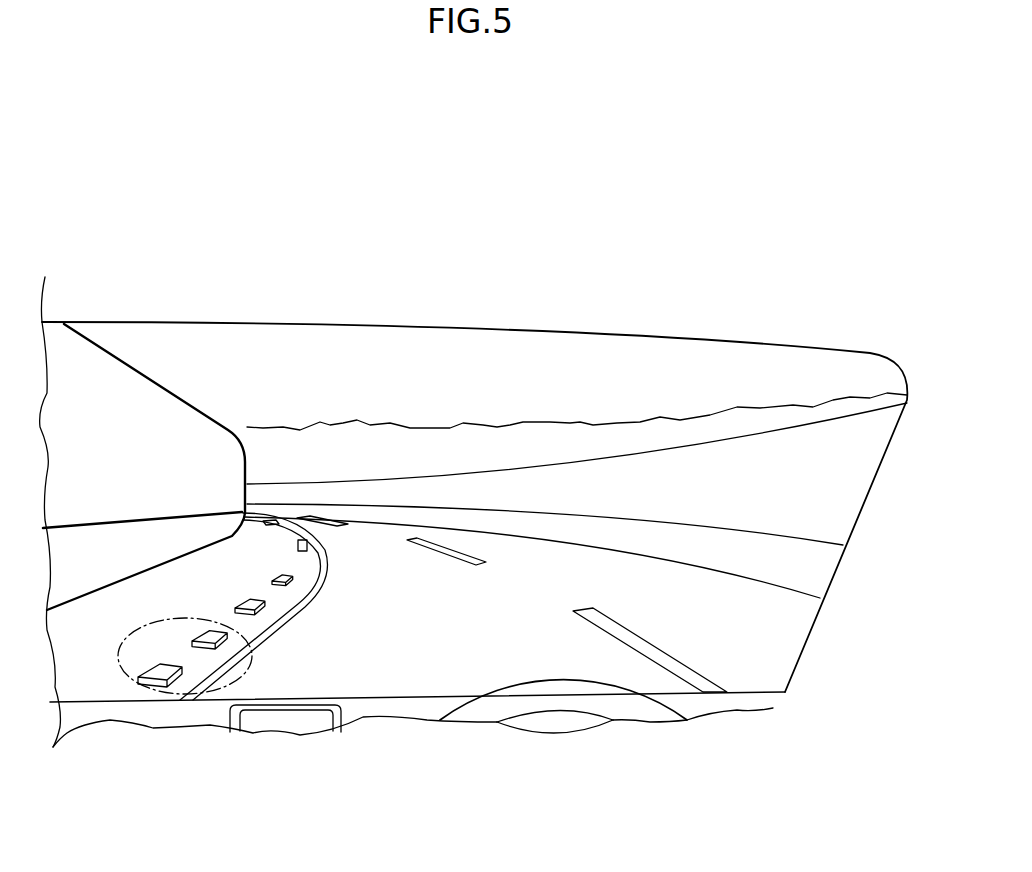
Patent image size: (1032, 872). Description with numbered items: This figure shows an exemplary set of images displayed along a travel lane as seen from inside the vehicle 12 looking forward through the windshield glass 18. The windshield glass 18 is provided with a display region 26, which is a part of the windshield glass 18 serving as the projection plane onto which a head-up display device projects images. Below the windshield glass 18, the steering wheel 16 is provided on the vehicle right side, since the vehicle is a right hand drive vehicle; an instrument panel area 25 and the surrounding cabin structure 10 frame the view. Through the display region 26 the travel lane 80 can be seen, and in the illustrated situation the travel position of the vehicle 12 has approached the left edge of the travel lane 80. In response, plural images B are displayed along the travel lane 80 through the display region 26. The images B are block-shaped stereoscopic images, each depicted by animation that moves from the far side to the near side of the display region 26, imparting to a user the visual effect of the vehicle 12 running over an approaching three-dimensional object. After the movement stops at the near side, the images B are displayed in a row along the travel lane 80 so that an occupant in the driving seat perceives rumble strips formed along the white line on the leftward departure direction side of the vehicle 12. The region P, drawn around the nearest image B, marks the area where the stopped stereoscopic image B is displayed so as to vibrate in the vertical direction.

The vehicle 10 is at (316, 263).
The vehicle 12 is at (352, 213).
The steering wheel 16 is at (673, 710).
The windshield glass 18 is at (631, 333).
The display region 26 is at (474, 507).
The display unit 25 is at (283, 729).
The travel lane 80 is at (378, 548).
The image B is at (150, 670).
The region P is at (122, 705).